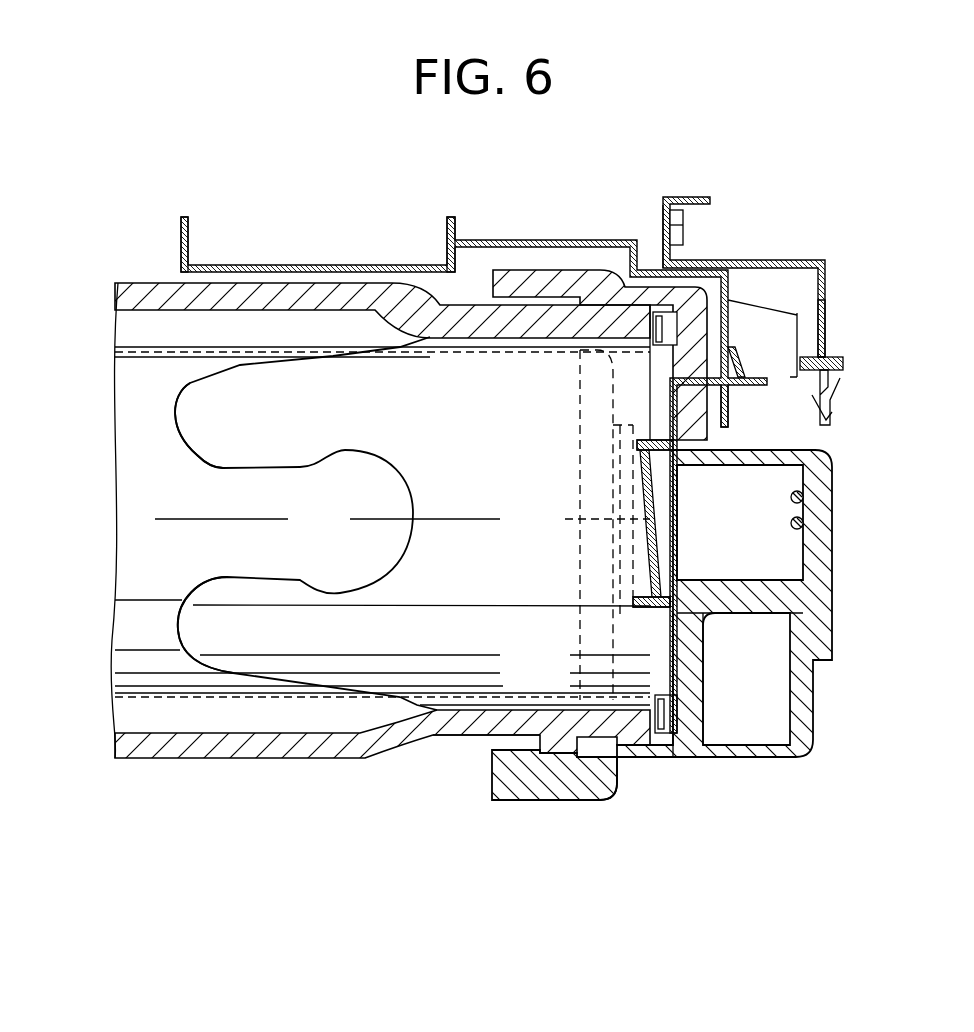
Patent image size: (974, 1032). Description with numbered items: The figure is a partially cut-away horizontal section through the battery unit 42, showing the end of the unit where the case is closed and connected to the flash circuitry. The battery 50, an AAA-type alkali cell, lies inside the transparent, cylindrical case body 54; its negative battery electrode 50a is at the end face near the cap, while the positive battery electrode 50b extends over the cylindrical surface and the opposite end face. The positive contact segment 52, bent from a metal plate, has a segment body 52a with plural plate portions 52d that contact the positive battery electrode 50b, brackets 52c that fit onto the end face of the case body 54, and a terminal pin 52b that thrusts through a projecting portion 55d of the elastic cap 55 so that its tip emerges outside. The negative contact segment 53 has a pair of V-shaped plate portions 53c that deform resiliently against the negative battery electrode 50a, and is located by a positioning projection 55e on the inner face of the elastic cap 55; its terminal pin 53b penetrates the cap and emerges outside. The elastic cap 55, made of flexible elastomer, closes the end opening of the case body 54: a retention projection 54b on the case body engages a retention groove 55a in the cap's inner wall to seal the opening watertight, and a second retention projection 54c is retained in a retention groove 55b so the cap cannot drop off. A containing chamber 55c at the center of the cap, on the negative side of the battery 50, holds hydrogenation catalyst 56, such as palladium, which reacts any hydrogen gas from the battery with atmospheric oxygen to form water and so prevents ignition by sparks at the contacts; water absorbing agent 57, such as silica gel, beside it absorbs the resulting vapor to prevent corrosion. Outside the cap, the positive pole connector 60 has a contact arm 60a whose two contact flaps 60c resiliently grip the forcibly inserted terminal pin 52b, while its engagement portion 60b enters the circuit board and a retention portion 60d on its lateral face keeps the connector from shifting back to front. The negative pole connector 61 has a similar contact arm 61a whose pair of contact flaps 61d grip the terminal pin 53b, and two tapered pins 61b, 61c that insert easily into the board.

The battery unit 42 is at (492, 521).
The battery 50 is at (167, 697).
The negative battery electrode 50a is at (640, 520).
The positive battery electrode 50b is at (155, 517).
The positive contact segment 52 is at (178, 402).
The segment body 52a is at (410, 518).
The terminal pin 52b is at (845, 363).
The brackets 52c is at (660, 715).
The plate portions 52d is at (217, 437).
The negative contact segment 53 is at (678, 483).
The terminal pin 53b is at (826, 418).
The plate portions 53c is at (637, 440).
The case body 54 is at (290, 763).
The retention projection 54b is at (603, 740).
The retention projection 54c is at (530, 740).
The elastic cap 55 is at (833, 503).
The retention groove 55a is at (617, 787).
The retention groove 55b is at (557, 800).
The containing chamber 55c is at (790, 566).
The projecting portion 55d is at (800, 335).
The positioning projection 55e is at (703, 658).
The hydrogenation catalyst 56 is at (790, 498).
The water absorbing agent 57 is at (790, 524).
The positive pole connector 60 is at (793, 259).
The contact arm 60a is at (838, 330).
The engagement portion 60b is at (660, 226).
The contact flaps 60c is at (830, 353).
The retention portion 60d is at (680, 227).
The negative pole connector 61 is at (487, 238).
The contact arm 61a is at (742, 332).
The pin 61b is at (447, 228).
The pin 61c is at (190, 222).
The contact flaps 61d is at (738, 365).